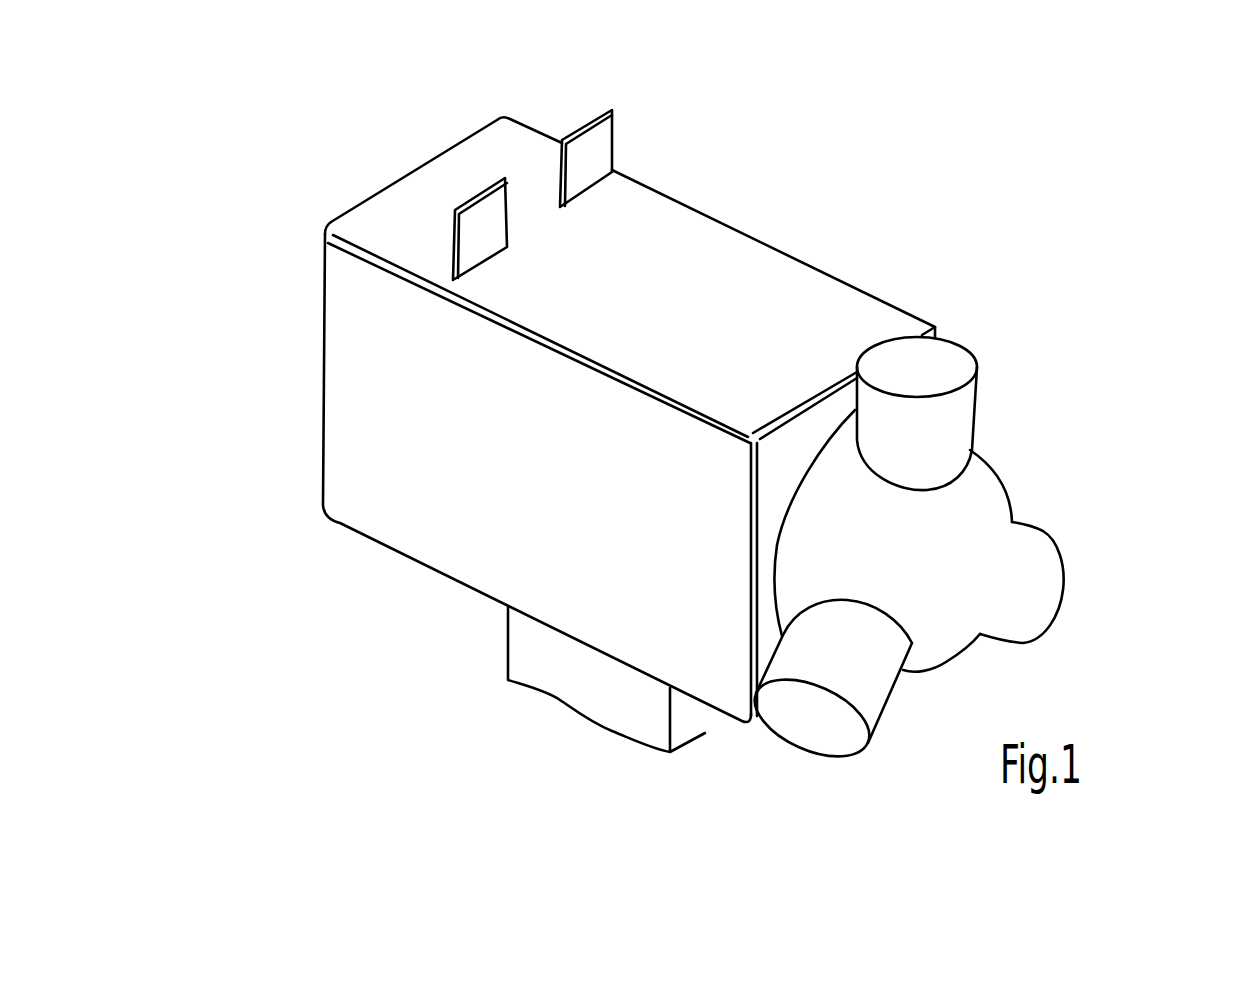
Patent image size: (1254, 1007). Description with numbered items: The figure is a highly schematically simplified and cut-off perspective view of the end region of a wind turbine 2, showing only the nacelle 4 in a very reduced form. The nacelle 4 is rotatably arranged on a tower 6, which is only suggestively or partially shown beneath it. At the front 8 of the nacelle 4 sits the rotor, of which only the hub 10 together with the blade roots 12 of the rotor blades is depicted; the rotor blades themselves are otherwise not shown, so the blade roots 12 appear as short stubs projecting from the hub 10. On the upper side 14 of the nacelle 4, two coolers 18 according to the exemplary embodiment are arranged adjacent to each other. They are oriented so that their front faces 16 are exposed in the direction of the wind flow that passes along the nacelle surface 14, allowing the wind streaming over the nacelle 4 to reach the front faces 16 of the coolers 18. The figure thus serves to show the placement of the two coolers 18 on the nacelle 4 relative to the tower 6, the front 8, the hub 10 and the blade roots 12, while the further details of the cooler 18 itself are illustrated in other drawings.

The wind turbine 2 is at (953, 213).
The nacelle 4 is at (353, 373).
The tower 6 is at (550, 653).
The front 8 is at (772, 632).
The hub 10 is at (957, 523).
The blade root 12 is at (960, 413).
The upper side 14 is at (688, 235).
The front face 16 is at (487, 213).
The cooler 18 is at (497, 180).